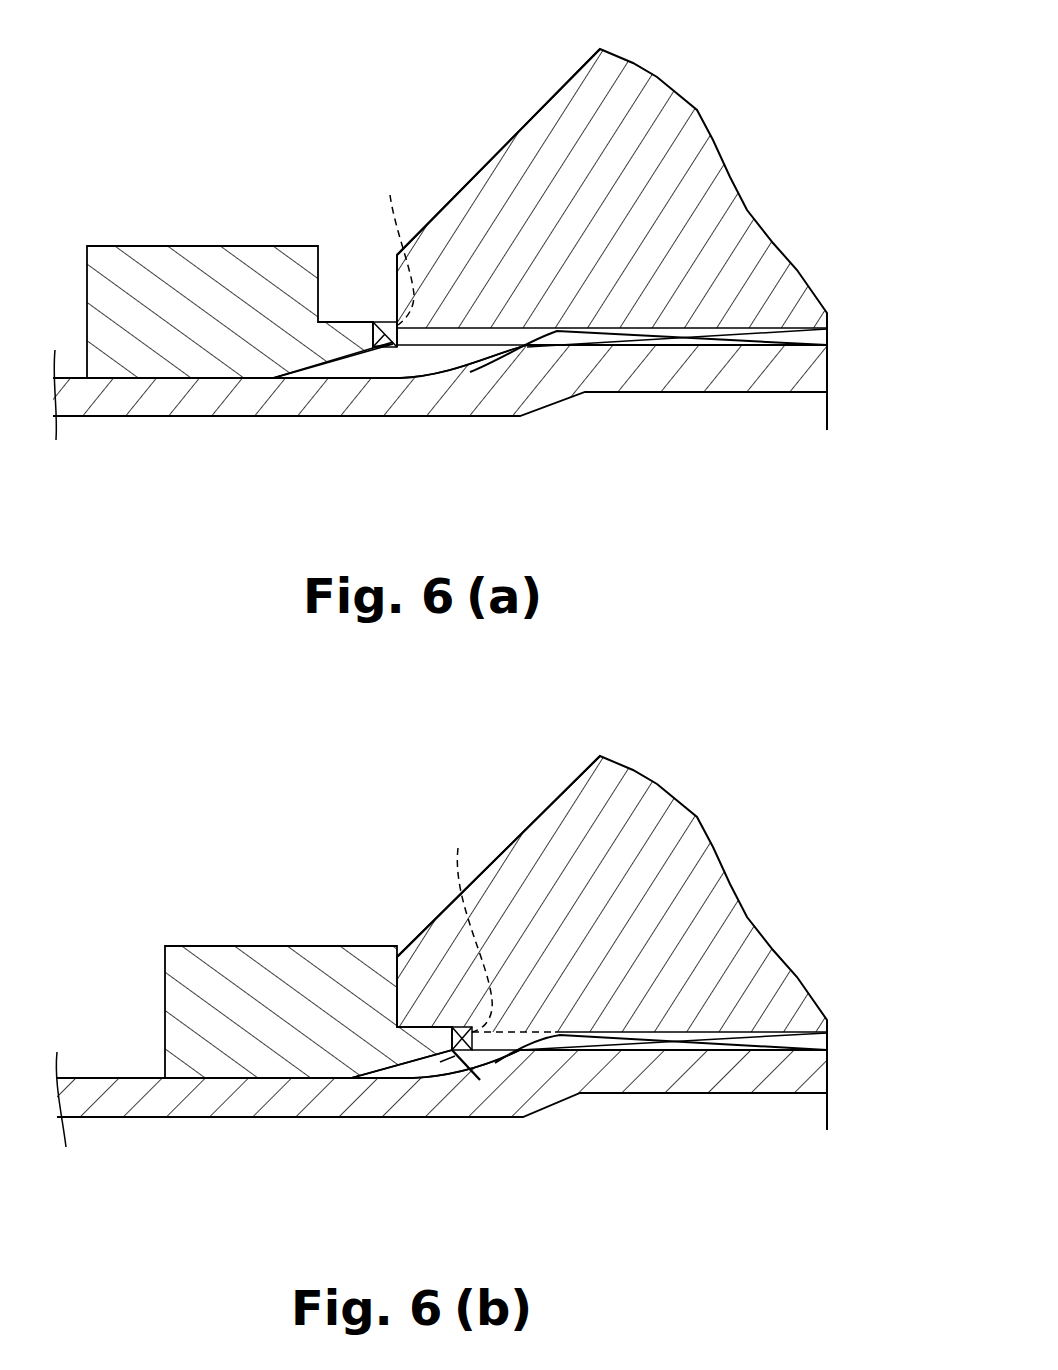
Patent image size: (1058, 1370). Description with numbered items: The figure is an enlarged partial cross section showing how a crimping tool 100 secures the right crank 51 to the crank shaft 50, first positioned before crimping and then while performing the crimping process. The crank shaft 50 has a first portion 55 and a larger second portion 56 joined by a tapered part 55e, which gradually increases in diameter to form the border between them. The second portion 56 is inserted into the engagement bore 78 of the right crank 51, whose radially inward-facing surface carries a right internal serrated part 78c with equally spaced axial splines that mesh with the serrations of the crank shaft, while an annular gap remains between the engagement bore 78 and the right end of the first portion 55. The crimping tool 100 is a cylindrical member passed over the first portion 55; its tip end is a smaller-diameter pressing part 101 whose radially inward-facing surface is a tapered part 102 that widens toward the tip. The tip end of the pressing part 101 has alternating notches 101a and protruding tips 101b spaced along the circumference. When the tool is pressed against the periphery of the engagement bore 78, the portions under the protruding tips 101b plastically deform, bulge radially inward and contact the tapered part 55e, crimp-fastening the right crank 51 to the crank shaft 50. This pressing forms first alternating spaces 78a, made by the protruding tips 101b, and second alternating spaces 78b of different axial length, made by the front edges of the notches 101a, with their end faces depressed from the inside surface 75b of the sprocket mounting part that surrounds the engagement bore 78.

In FIG. 6a, the crank shaft 50 is at (120, 424).
In FIG. 6b, the crank shaft 50 is at (100, 1062).
In FIG. 6a, the right crank 51 is at (522, 106).
In FIG. 6b, the right crank 51 is at (561, 775).
In FIG. 6a, the first portion 55 is at (233, 410).
In FIG. 6b, the first portion 55 is at (237, 1110).
In FIG. 6a, the tapered part 55e is at (472, 355).
In FIG. 6b, the tapered part 55e is at (506, 1053).
In FIG. 6a, the second portion 56 is at (608, 398).
In FIG. 6b, the second portion 56 is at (610, 1101).
In FIG. 6a, the inside surface 75b is at (479, 165).
In FIG. 6b, the inside surface 75b is at (524, 815).
In FIG. 6a, the engagement bore 78 is at (443, 345).
In FIG. 6b, the engagement bore 78 is at (696, 1058).
In FIG. 6b, the first alternating spaces 78a is at (479, 1085).
In FIG. 6b, the second alternating spaces 78b is at (447, 1055).
In FIG. 6a, the right internal serrated part 78c is at (745, 340).
In FIG. 6b, the right internal serrated part 78c is at (770, 1042).
In FIG. 6a, the crimping tool 100 is at (209, 254).
In FIG. 6b, the crimping tool 100 is at (289, 966).
In FIG. 6a, the pressing part 101 is at (347, 322).
In FIG. 6b, the pressing part 101 is at (450, 1027).
In FIG. 6a, the notches 101a is at (399, 238).
In FIG. 6b, the notches 101a is at (459, 920).
In FIG. 6a, the protruding tips 101b is at (393, 350).
In FIG. 6a, the tapered part 102 is at (372, 352).
In FIG. 6b, the tapered part 102 is at (413, 1076).